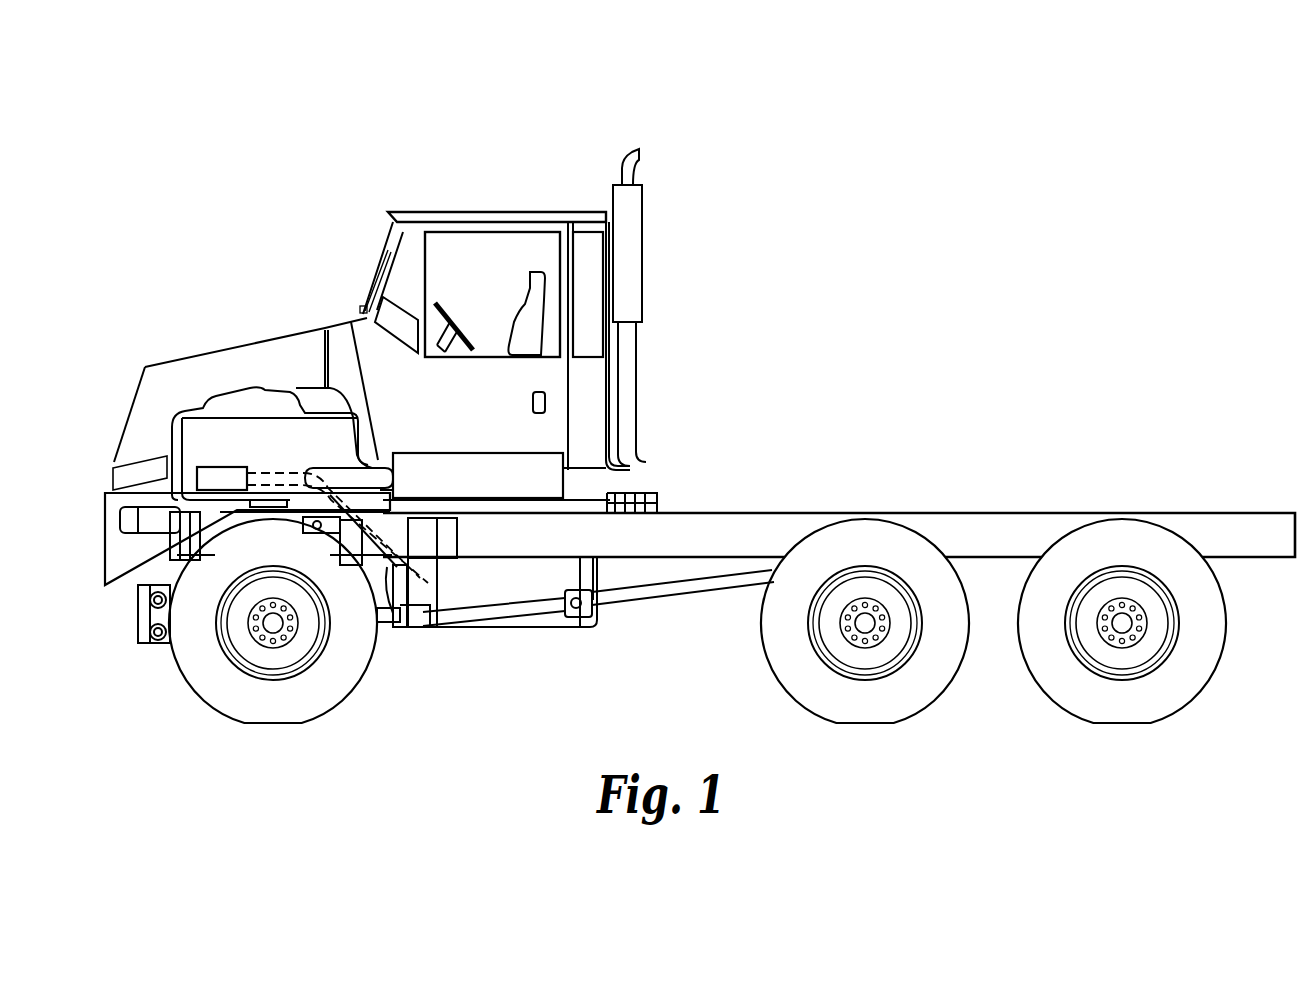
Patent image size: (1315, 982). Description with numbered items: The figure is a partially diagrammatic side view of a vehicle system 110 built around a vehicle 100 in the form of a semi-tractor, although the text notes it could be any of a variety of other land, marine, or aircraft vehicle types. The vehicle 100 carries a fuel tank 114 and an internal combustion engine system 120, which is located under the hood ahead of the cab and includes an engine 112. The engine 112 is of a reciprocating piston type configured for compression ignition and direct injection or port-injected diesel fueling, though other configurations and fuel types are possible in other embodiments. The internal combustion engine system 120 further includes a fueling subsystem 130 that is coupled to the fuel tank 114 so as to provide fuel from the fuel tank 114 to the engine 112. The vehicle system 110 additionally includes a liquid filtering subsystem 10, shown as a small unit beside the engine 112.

The liquid filtering subsystem 10 is at (213, 465).
The vehicle 100 is at (446, 207).
The vehicle system 110 is at (827, 228).
The engine 112 is at (293, 408).
The fuel tank 114 is at (508, 623).
The internal combustion engine system 120 is at (215, 193).
The fueling subsystem 130 is at (397, 567).